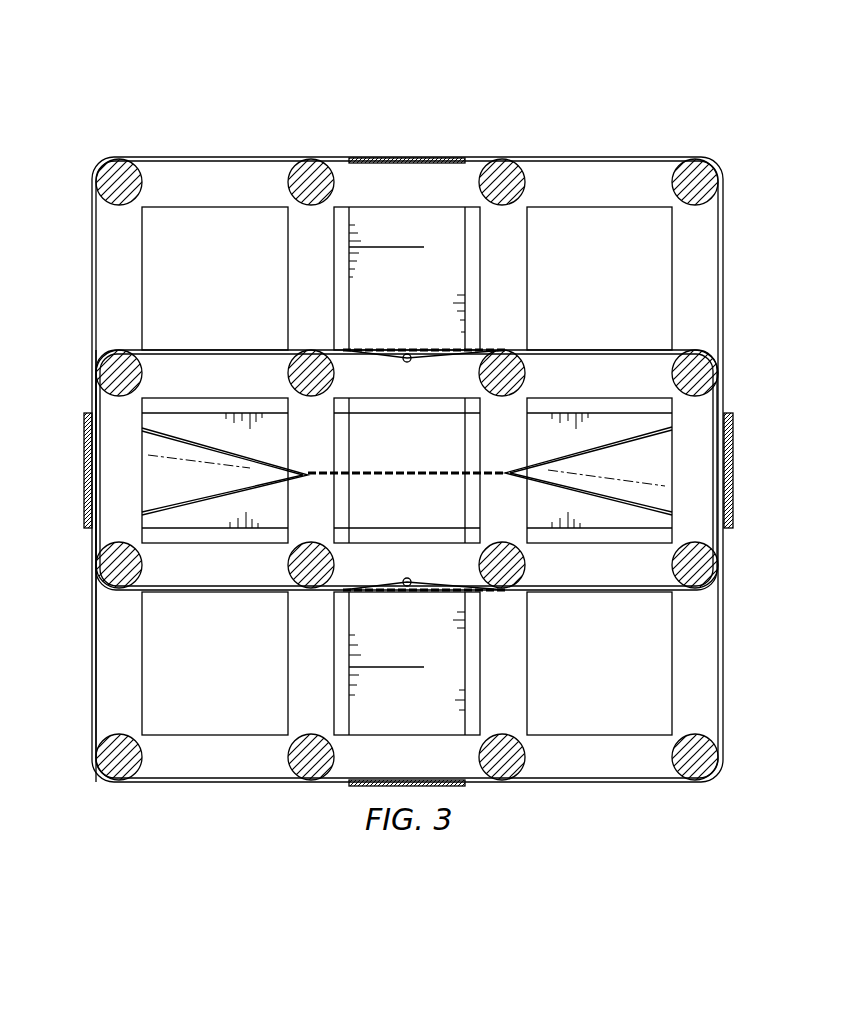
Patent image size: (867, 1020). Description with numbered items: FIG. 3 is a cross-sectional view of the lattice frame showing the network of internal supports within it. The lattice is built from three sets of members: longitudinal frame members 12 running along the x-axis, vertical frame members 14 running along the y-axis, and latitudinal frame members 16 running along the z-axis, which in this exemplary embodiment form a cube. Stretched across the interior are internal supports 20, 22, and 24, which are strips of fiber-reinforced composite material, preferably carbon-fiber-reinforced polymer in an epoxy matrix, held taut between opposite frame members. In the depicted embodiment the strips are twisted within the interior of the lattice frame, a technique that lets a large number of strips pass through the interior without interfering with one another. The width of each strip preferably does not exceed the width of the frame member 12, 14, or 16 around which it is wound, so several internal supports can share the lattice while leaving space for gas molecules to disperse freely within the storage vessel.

The longitudinal frame member 12 is at (215, 768).
The vertical frame member 14 is at (117, 672).
The latitudinal frame member 16 is at (107, 768).
The internal support 20 is at (393, 232).
The internal support 22 is at (640, 468).
The internal support 24 is at (613, 350).